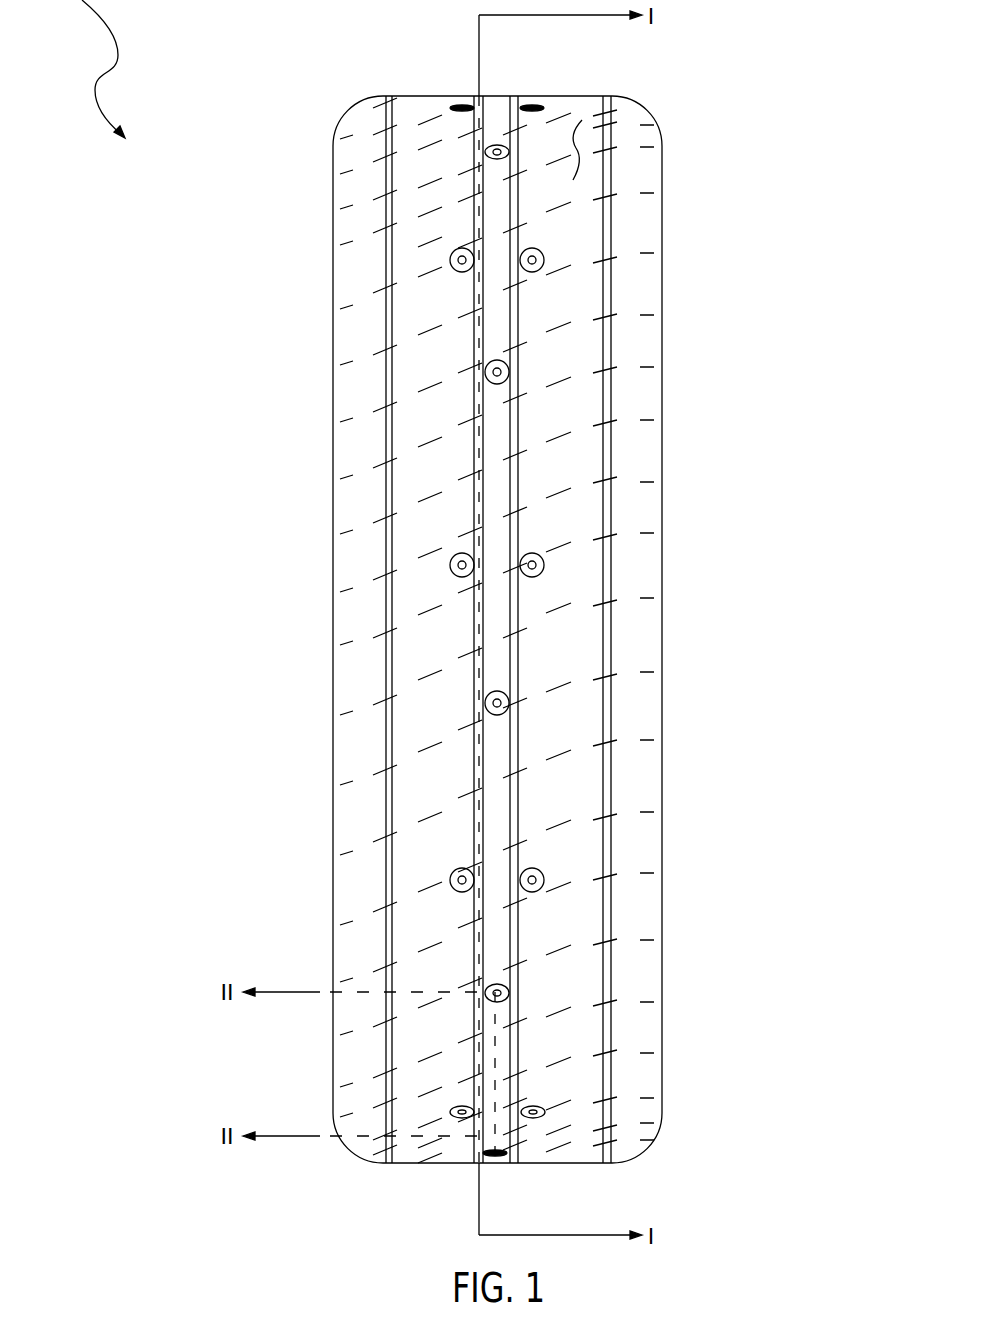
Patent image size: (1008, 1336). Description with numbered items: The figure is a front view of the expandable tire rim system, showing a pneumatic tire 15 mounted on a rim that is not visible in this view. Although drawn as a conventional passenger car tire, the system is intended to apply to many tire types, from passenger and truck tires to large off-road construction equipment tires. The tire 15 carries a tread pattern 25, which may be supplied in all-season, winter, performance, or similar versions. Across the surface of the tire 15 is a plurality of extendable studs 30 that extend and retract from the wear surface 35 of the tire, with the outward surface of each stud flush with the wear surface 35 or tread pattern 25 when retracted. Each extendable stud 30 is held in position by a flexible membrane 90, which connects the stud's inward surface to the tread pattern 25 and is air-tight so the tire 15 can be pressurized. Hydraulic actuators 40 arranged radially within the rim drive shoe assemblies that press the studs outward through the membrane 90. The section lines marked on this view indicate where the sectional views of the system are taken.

The pneumatic tire 15 is at (653, 497).
The tread pattern 25 is at (607, 303).
The extendable stud 30 is at (488, 152).
The wear surface 35 is at (583, 121).
The hydraulic actuator 40 is at (497, 152).
The flexible membrane 90 is at (486, 156).